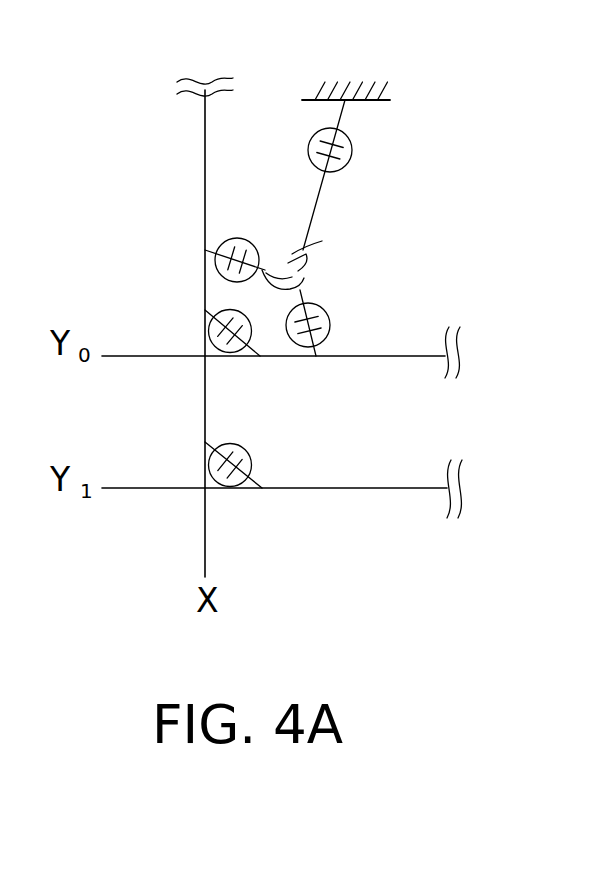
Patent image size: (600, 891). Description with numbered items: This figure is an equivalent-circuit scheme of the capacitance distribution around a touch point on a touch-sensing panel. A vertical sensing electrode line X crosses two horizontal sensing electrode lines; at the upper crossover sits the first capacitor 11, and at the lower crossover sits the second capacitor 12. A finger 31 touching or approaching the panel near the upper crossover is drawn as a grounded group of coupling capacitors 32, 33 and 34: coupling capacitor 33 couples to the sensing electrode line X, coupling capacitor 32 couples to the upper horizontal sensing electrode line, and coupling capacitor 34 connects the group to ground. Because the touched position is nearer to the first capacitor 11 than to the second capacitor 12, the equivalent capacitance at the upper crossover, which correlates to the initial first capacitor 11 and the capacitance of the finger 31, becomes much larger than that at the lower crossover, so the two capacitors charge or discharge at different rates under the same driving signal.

The first capacitor 11 is at (210, 330).
The second capacitor 12 is at (251, 463).
The finger 31 is at (300, 287).
The coupling capacitor 32 is at (330, 322).
The coupling capacitor 33 is at (243, 238).
The coupling capacitor 34 is at (352, 155).